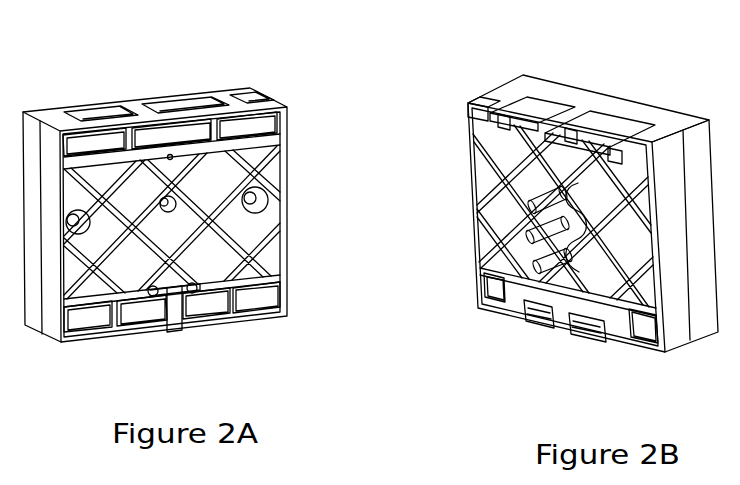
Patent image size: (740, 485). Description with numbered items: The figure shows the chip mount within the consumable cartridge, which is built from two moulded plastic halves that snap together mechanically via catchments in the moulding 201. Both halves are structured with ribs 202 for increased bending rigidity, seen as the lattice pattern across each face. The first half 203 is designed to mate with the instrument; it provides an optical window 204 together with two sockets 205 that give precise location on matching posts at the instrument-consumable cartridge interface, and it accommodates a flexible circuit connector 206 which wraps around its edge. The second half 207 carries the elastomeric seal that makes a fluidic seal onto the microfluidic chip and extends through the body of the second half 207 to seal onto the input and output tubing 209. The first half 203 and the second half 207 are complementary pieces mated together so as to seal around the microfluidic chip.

In FIG. 2B, the catchments in the moulding 201 is at (468, 103).
In FIG. 2A, the ribs 202 is at (263, 308).
In FIG. 2B, the ribs 202 is at (476, 272).
In FIG. 2A, the first half 203 is at (61, 345).
In FIG. 2A, the optical window 204 is at (169, 154).
In FIG. 2A, the sockets 205 is at (263, 210).
In FIG. 2A, the flexible circuit connector 206 is at (172, 308).
In FIG. 2B, the second half 207 is at (665, 353).
In FIG. 2B, the input and output tubing 209 is at (550, 328).